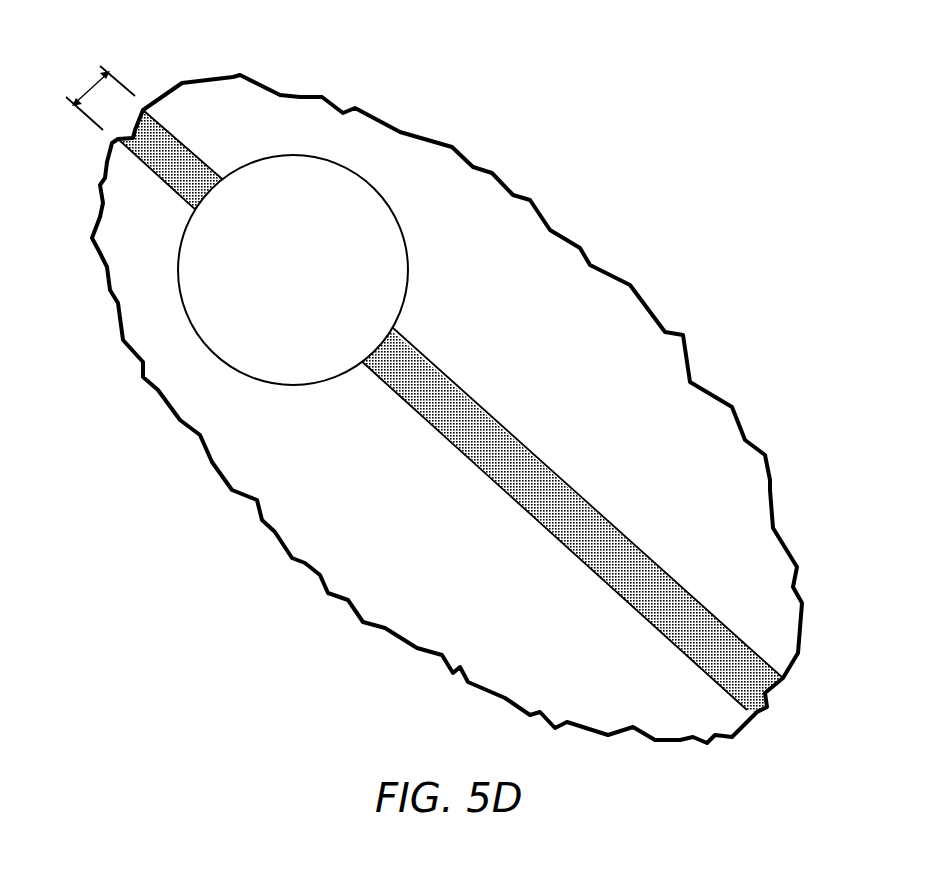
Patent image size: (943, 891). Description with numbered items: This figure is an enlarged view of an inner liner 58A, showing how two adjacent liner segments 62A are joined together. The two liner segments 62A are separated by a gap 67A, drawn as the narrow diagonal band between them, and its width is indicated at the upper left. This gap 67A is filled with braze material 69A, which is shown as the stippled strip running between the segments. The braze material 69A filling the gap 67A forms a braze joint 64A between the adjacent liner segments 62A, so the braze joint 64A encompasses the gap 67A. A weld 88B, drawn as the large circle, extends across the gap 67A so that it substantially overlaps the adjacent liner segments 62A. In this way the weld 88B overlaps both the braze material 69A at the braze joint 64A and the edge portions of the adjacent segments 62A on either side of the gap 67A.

The inner liner 58A is at (84, 266).
The liner segments 62A is at (503, 289).
The braze joint 64A is at (772, 690).
The gap 67A is at (92, 88).
The braze material 69A is at (685, 615).
The weld 88B is at (242, 310).